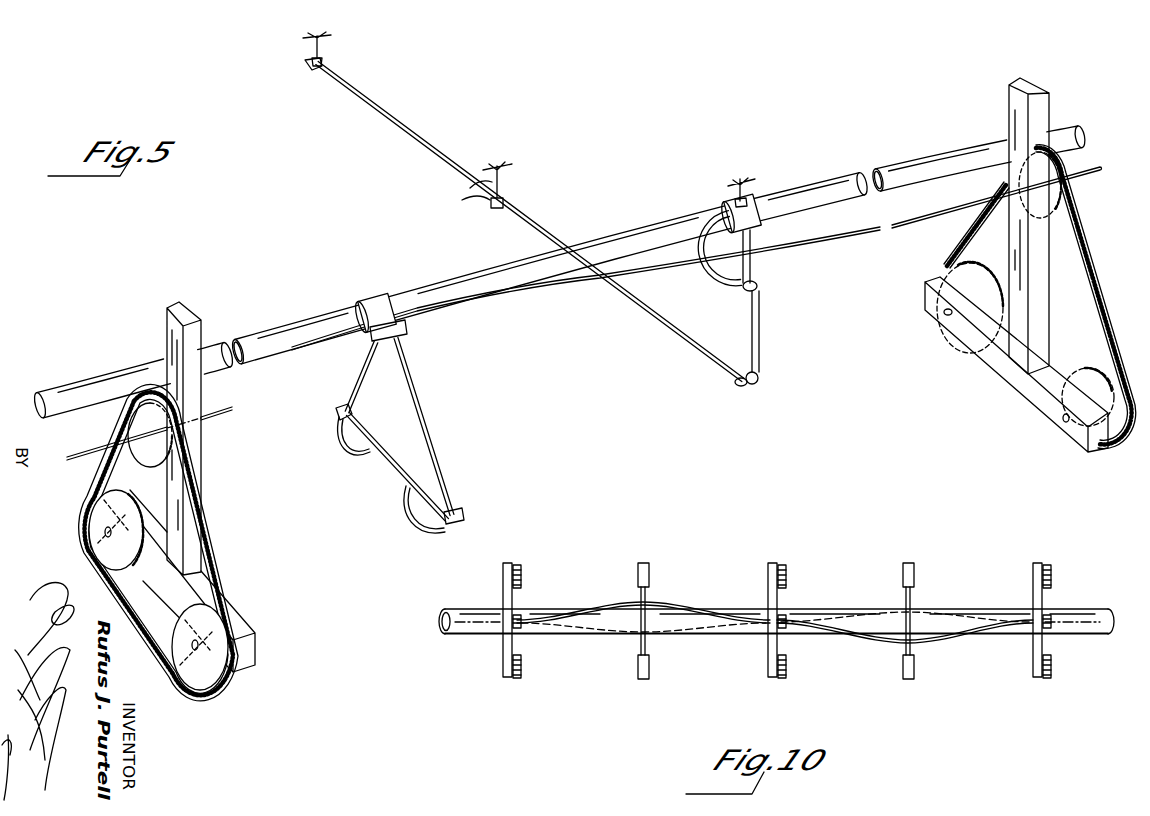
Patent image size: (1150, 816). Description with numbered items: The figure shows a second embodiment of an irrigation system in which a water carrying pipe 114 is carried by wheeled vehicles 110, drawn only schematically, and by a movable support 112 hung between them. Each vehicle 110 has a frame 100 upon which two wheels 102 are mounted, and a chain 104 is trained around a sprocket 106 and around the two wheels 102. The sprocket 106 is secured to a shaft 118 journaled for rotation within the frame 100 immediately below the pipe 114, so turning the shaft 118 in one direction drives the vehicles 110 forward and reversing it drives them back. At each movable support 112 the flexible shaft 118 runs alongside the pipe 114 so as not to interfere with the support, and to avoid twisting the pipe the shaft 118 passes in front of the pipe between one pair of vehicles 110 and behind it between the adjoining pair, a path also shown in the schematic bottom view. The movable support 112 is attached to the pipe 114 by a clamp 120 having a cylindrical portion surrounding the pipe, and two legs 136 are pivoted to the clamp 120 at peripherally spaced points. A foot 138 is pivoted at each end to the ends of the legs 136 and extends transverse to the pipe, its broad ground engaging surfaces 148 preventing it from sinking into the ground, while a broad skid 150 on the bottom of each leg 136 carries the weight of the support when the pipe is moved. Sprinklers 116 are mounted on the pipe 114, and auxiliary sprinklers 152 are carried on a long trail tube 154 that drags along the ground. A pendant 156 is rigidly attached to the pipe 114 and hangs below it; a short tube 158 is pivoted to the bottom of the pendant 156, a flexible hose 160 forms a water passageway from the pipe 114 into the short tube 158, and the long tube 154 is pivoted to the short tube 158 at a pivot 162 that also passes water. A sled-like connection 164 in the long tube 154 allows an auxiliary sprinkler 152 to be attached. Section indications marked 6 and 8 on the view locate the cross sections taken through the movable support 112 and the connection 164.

In FIG. 5, the frame 100 is at (201, 462).
In FIG. 5, the wheels 102 is at (92, 506).
In FIG. 10, the wheels 102 is at (520, 569).
In FIG. 5, the chain 104 is at (218, 560).
In FIG. 5, the sprocket 106 is at (152, 466).
In FIG. 10, the sprocket 106 is at (522, 616).
In FIG. 5, the vehicles 110 is at (252, 611).
In FIG. 10, the vehicles 110 is at (501, 577).
In FIG. 5, the movable support 112 is at (404, 438).
In FIG. 10, the movable support 112 is at (778, 617).
In FIG. 5, the water carrying pipe 114 is at (68, 392).
In FIG. 10, the water carrying pipe 114 is at (578, 630).
In FIG. 5, the sprinklers 116 is at (736, 186).
In FIG. 5, the shaft 118 is at (100, 450).
In FIG. 10, the shaft 118 is at (615, 606).
In FIG. 5, the clamp 120 is at (381, 304).
In FIG. 5, the leg 136 is at (367, 388).
In FIG. 5, the foot 138 is at (383, 469).
In FIG. 10, the foot 138 is at (647, 642).
In FIG. 5, the ground engaging surfaces 148 is at (351, 452).
In FIG. 10, the ground engaging surfaces 148 is at (638, 570).
In FIG. 5, the skid 150 is at (342, 405).
In FIG. 5, the auxiliary sprinklers 152 is at (330, 39).
In FIG. 5, the long tube 154 is at (552, 237).
In FIG. 5, the pendant 156 is at (754, 262).
In FIG. 5, the short tube 158 is at (762, 325).
In FIG. 5, the flexible hose 160 is at (719, 261).
In FIG. 5, the pivot 162 is at (760, 380).
In FIG. 5, the connection 164 is at (304, 74).
In FIG. 5, the section line 6- 6 is at (257, 315).
In FIG. 5, the section line 8- 8 is at (470, 153).